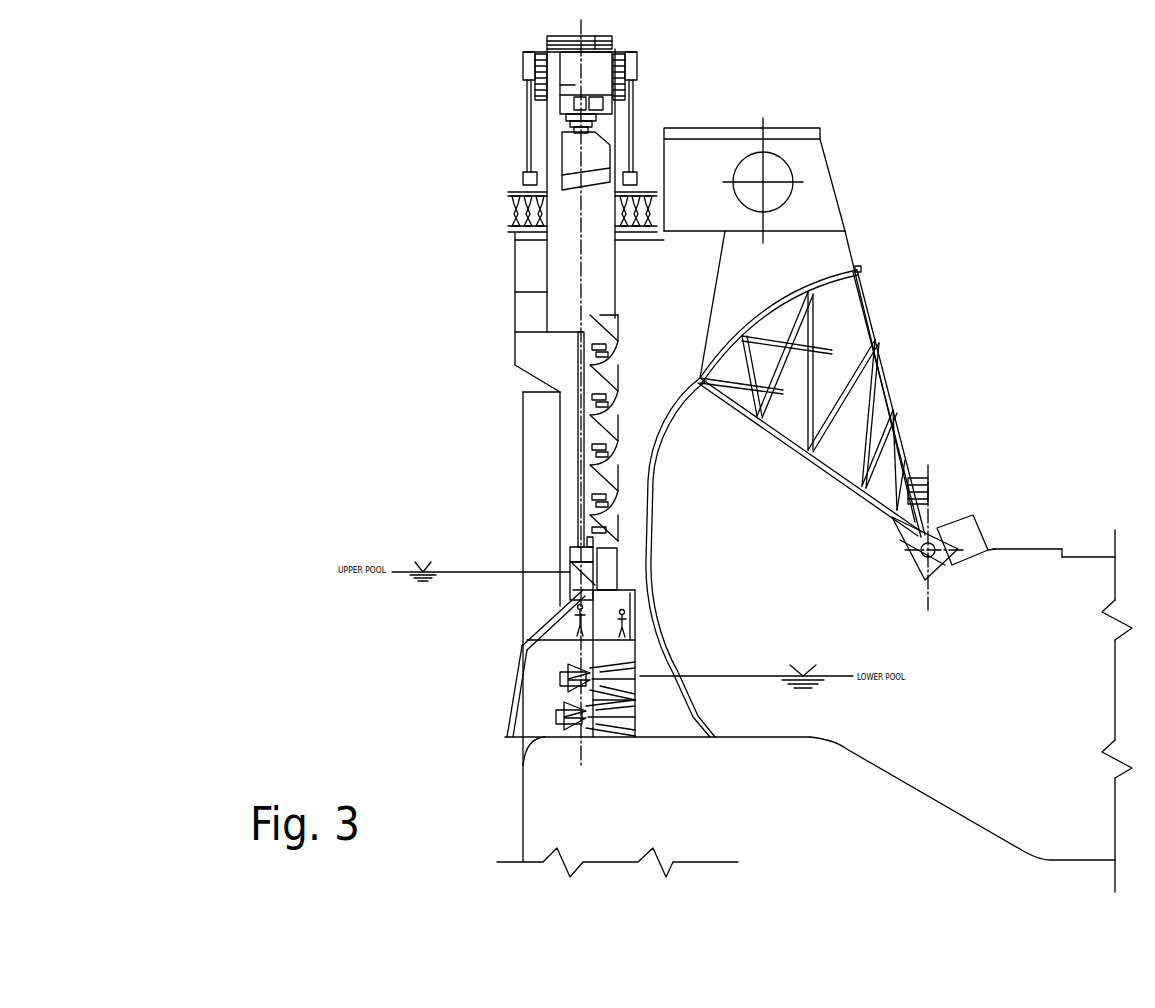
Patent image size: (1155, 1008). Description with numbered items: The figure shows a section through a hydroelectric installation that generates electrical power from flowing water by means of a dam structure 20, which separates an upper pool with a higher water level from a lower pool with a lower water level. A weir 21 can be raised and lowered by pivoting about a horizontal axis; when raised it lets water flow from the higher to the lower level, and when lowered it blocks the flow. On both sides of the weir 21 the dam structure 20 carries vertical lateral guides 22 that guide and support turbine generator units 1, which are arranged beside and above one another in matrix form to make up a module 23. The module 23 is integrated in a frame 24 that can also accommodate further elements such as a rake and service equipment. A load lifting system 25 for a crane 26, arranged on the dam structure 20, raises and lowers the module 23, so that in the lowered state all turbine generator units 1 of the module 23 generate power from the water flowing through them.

The turbine generator unit 1 is at (562, 717).
The dam structure 20 is at (845, 188).
The weir 21 is at (845, 367).
The vertical lateral guide 22 is at (577, 441).
The module 23 is at (603, 745).
The frame 24 is at (635, 662).
The load lifting system 25 is at (577, 542).
The crane 26 is at (597, 70).